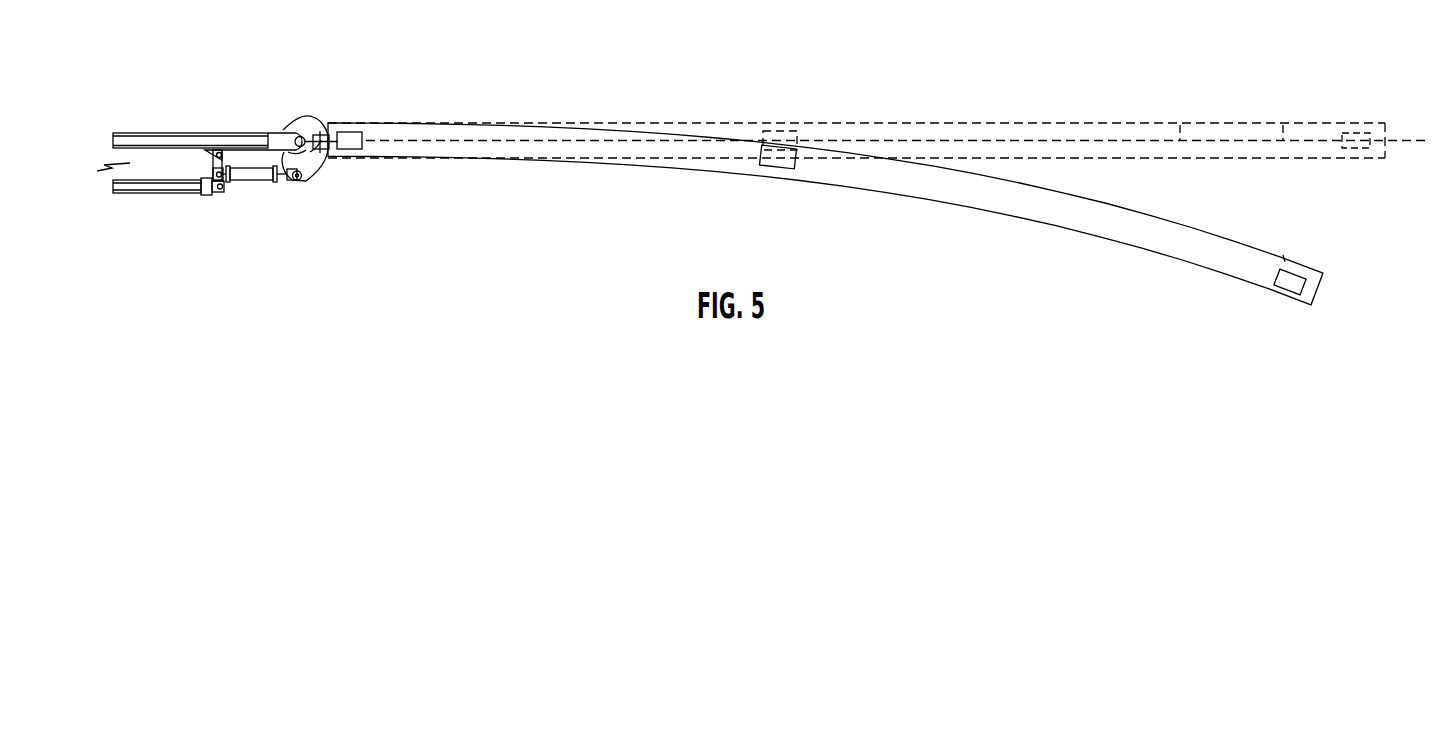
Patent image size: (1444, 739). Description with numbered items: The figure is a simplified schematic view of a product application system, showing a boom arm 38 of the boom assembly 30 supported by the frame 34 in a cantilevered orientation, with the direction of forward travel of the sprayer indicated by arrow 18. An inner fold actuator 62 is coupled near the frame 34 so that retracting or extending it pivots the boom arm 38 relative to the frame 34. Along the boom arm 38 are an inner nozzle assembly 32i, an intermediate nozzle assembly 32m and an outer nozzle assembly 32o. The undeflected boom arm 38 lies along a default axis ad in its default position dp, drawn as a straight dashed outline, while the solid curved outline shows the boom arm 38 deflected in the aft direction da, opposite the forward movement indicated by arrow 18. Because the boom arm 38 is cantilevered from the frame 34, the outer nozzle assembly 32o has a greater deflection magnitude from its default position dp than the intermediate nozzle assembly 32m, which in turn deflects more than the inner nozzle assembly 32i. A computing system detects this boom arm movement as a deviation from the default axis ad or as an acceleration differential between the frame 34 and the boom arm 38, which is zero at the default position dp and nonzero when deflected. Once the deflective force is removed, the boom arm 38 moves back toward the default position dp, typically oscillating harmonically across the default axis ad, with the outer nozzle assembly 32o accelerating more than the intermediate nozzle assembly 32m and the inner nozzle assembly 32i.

The arrow indicating direction of travel 18 is at (130, 100).
The boom assembly 30 is at (329, 84).
The frame 34 is at (185, 203).
The second boom arm 38 is at (460, 118).
The inner fold actuator 62 is at (258, 185).
The inner nozzle assembly 32i is at (350, 149).
The intermediate nozzle assembly 32m is at (793, 170).
The outer nozzle assembly 32o is at (1363, 130).
The default axis ad is at (1180, 138).
The default position dp is at (1283, 138).
The aft direction da is at (1283, 260).